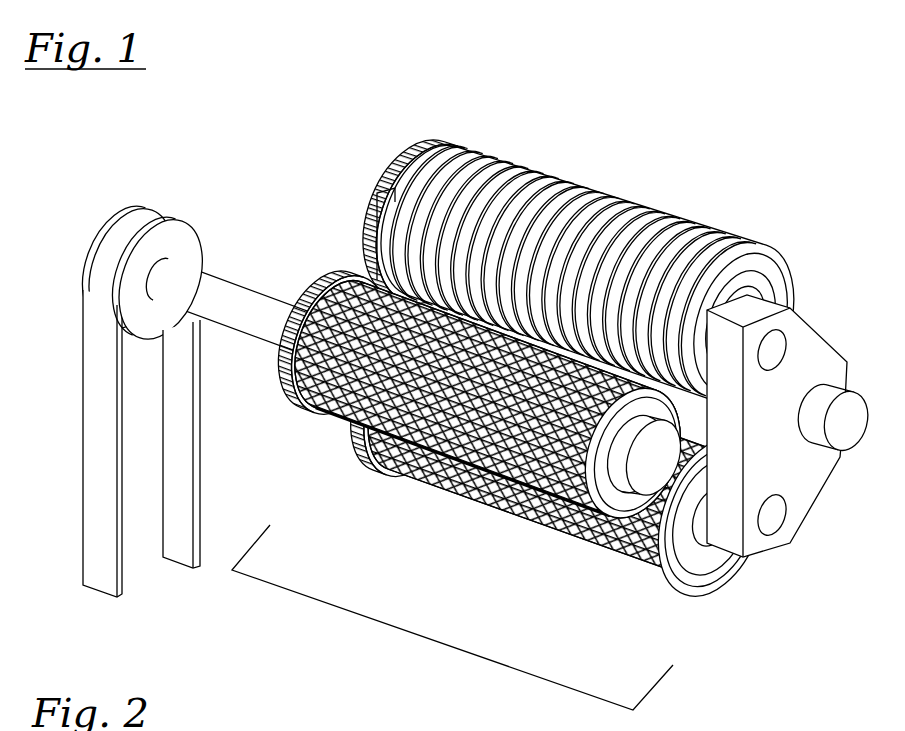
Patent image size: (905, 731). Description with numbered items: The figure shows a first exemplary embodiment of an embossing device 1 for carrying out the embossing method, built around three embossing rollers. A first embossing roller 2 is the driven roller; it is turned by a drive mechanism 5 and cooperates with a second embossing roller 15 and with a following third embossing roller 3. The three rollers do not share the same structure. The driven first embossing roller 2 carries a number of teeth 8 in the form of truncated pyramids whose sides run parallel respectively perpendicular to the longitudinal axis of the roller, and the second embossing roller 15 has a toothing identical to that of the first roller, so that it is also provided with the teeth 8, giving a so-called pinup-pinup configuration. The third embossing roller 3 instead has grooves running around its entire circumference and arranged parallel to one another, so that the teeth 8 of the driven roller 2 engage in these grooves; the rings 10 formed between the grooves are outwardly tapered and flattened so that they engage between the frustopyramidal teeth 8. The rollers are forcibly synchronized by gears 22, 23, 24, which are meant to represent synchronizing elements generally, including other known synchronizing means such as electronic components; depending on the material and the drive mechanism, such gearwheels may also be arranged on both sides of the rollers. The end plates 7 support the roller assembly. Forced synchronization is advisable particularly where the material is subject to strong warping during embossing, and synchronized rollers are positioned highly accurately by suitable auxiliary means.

The device 1 is at (430, 642).
The first embossing roller 2 is at (368, 433).
The third embossing roller 3 is at (575, 183).
The drive mechanism 5 is at (125, 232).
The end plate 7 is at (383, 188).
The teeth 8 is at (647, 572).
The rings 10 is at (683, 223).
The second embossing roller 15 is at (602, 557).
The gear 22 is at (335, 290).
The gear 23 is at (405, 477).
The gear 24 is at (457, 150).